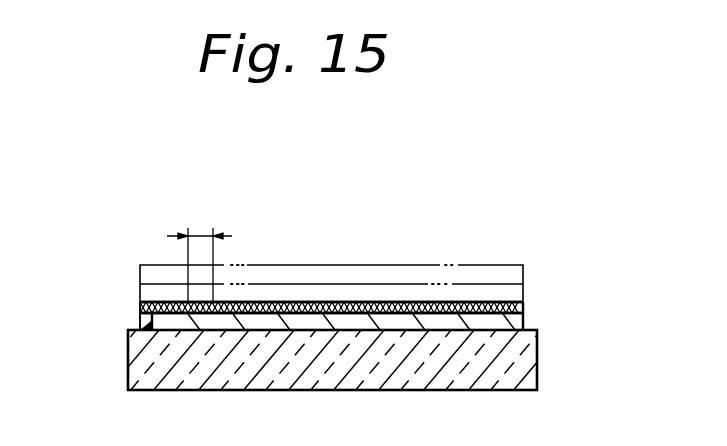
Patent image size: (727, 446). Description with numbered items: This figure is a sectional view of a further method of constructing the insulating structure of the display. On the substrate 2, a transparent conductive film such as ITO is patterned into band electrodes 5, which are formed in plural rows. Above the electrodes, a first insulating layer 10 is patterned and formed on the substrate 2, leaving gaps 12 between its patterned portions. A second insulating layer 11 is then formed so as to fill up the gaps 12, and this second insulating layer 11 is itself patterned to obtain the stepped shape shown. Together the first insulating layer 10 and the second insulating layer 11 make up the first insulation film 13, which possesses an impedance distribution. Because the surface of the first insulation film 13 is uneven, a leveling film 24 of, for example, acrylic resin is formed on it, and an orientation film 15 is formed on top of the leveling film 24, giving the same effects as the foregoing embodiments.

The substrate 2 is at (515, 361).
The band electrodes 5 is at (493, 320).
The first insulating layer 10 is at (493, 303).
The second insulating layer 11 is at (462, 312).
The gaps 12 is at (197, 238).
The first insulation film 13 is at (535, 210).
The orientation film 15 is at (265, 276).
The leveling film 24 is at (147, 295).